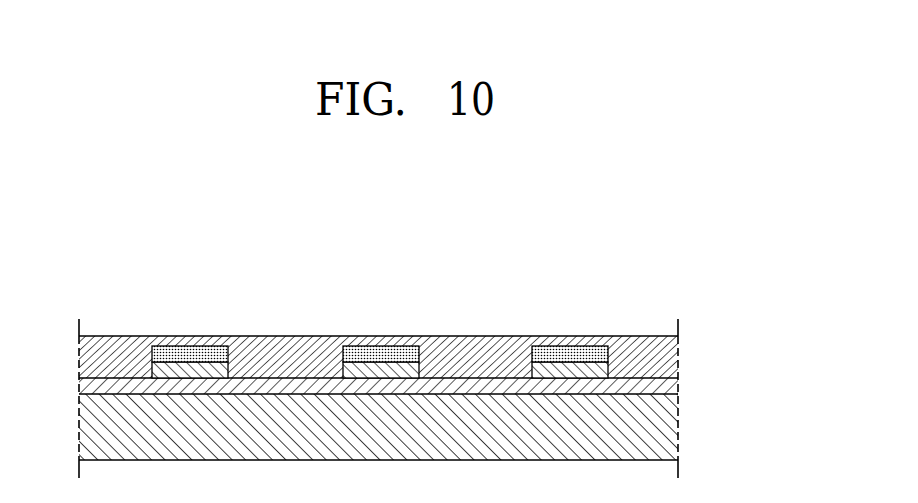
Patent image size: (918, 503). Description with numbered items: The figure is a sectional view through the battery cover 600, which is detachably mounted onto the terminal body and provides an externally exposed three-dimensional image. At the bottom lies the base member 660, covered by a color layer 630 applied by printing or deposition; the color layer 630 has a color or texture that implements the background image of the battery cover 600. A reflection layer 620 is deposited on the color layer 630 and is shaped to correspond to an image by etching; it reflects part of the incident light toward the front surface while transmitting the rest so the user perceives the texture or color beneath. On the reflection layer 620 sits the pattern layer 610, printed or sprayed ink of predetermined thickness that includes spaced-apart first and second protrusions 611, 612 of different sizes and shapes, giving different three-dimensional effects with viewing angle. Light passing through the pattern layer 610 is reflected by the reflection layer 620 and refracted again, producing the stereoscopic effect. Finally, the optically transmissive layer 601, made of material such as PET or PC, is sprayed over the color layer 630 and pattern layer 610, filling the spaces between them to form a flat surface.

The battery cover 600 is at (190, 285).
The optically transmissive layer 601 is at (672, 349).
The pattern layer 610 is at (380, 300).
The first protrusion 611 is at (383, 353).
The second protrusion 612 is at (570, 319).
The reflection layer 620 is at (600, 372).
The color layer 630 is at (672, 386).
The base member 660 is at (672, 428).